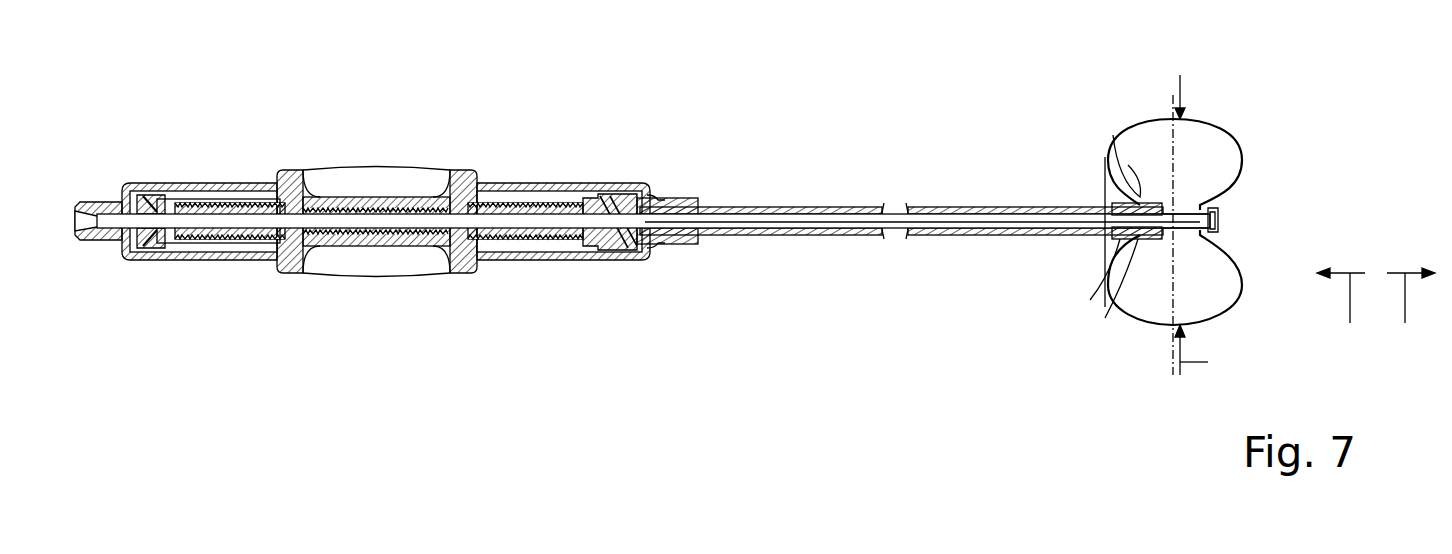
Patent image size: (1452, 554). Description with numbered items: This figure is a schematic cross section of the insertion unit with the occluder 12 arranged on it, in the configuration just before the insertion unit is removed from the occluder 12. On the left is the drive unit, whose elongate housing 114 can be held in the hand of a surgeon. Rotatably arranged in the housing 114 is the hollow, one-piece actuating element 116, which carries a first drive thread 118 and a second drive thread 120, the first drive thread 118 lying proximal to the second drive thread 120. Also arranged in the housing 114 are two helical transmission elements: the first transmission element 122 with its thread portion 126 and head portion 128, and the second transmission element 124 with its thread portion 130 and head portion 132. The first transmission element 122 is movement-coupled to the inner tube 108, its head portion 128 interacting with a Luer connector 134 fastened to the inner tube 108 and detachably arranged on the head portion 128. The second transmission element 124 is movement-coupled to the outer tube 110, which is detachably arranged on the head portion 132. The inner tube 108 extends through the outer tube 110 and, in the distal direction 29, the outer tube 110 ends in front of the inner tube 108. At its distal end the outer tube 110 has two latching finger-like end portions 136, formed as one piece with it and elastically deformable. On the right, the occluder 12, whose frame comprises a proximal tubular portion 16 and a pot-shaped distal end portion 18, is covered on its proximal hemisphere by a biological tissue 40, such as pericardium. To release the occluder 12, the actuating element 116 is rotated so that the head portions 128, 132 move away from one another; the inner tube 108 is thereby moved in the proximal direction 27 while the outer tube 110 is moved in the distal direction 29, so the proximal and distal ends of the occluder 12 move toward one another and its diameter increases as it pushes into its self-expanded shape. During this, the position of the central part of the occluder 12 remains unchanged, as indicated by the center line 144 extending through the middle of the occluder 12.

The occluder 12 is at (1210, 120).
The proximal tubular portion 16 is at (1137, 200).
The pot-shaped distal end portion 18 is at (1220, 210).
The proximal direction 27 is at (1341, 311).
The distal direction 29 is at (1411, 311).
The biological tissue 40 is at (1105, 250).
The inner tube 108 is at (752, 228).
The outer tube 110 is at (733, 207).
The housing 114 is at (216, 190).
The actuating element 116 is at (460, 182).
The first drive thread 118 is at (320, 208).
The second drive thread 120 is at (404, 208).
The first transmission element 122 is at (150, 205).
The second transmission element 124 is at (618, 248).
The thread portion 126 is at (238, 230).
The head portion 128 is at (150, 240).
The thread portion 130 is at (548, 212).
The head portion 132 is at (620, 210).
The Luer connector 134 is at (103, 208).
The latching finger-like end portions 136 is at (1142, 247).
The center line 144 is at (1170, 150).